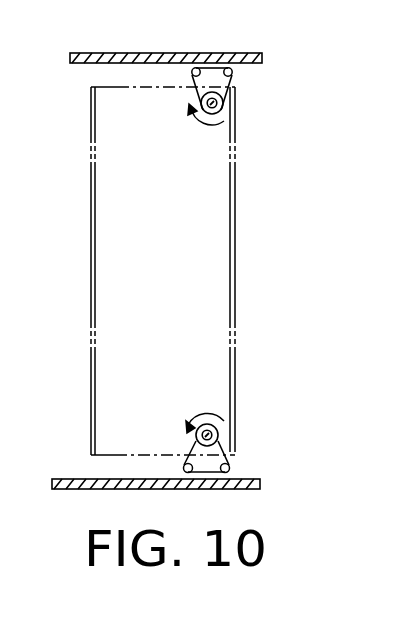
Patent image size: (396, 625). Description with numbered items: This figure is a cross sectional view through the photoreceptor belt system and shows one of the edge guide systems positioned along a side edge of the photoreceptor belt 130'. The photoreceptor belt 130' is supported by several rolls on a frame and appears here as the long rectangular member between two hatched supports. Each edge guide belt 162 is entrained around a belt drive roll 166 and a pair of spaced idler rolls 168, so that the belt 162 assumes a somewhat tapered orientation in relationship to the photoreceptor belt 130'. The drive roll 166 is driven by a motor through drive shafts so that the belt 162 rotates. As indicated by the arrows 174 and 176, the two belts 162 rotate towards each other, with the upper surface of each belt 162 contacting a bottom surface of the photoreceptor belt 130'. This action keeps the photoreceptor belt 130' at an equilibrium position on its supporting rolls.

The photoreceptor belt 130' is at (219, 271).
The belt 162 is at (235, 97).
The belt drive roll 166 is at (200, 101).
The idler rolls 168 is at (194, 69).
The arrow 174 is at (209, 126).
The arrow 176 is at (212, 414).